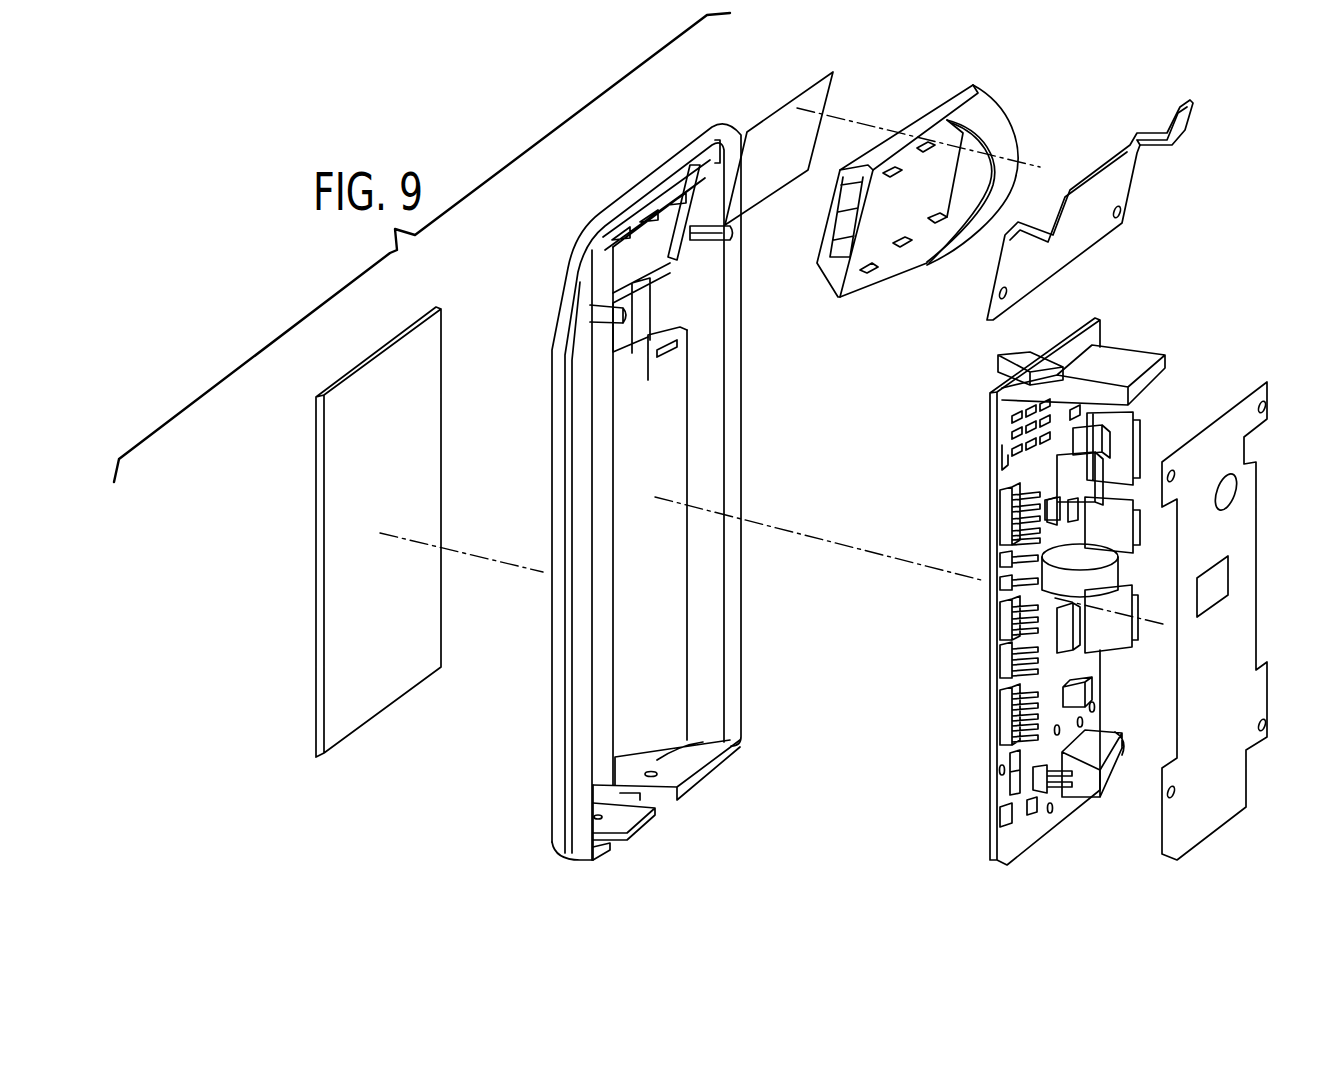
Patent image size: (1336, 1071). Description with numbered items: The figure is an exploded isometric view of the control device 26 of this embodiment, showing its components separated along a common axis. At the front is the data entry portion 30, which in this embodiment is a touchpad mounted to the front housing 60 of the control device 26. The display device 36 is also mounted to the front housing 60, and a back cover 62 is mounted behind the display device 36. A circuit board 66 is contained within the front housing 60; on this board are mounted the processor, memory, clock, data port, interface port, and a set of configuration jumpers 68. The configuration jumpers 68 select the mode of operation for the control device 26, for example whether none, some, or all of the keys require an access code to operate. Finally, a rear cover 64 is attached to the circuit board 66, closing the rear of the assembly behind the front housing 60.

The control device 26 is at (503, 229).
The data entry portion 30 is at (384, 438).
The front housing 60 is at (578, 767).
The display device 36 is at (995, 91).
The back cover 62 is at (1118, 185).
The circuit board 66 is at (1121, 328).
The configuration jumpers 68 is at (993, 563).
The rear cover 64 is at (1232, 639).